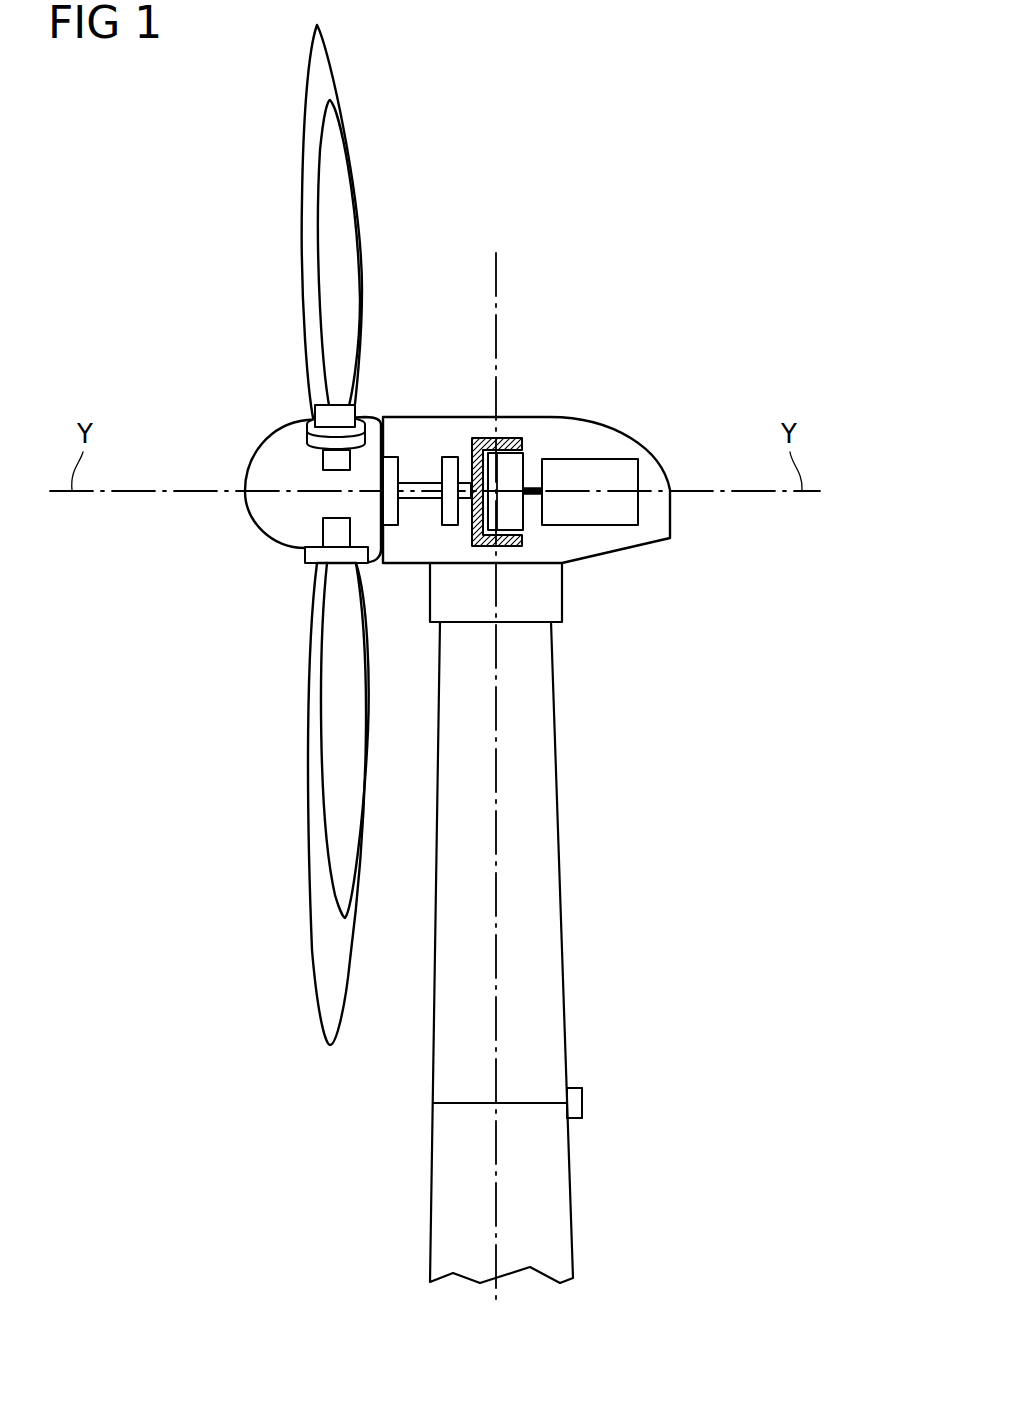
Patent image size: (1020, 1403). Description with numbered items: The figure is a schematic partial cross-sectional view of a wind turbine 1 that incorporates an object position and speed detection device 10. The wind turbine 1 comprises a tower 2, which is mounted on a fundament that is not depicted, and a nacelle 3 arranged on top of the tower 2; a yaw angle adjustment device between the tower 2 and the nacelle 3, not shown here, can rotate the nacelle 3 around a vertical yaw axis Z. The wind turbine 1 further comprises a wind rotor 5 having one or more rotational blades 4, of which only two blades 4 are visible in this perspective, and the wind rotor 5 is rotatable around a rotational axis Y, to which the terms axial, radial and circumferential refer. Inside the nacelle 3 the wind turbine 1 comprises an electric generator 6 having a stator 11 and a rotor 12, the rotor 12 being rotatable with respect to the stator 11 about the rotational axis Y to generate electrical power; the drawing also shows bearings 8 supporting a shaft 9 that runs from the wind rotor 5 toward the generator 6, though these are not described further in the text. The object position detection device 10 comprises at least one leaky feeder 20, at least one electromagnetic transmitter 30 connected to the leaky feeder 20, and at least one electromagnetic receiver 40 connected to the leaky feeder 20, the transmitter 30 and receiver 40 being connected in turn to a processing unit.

The wind turbine 1 is at (707, 217).
The tower 2 is at (496, 273).
The nacelle 3 is at (621, 421).
The rotational blades 4 is at (313, 201).
The wind rotor 5 is at (241, 527).
The electric generator 6 is at (529, 424).
The bearing 8 is at (450, 462).
The rotor shaft 9 is at (430, 493).
The object position and speed detection device 10 is at (553, 1082).
The stator 11 is at (517, 465).
The rotor 12 is at (502, 437).
The leaky feeder 20 is at (537, 1105).
The electromagnetic transmitter 30 is at (585, 1103).
The electromagnetic receiver 40 is at (574, 1103).